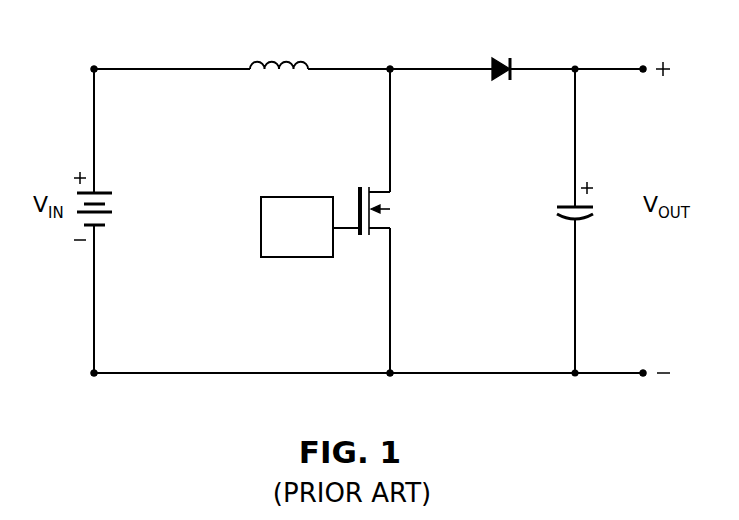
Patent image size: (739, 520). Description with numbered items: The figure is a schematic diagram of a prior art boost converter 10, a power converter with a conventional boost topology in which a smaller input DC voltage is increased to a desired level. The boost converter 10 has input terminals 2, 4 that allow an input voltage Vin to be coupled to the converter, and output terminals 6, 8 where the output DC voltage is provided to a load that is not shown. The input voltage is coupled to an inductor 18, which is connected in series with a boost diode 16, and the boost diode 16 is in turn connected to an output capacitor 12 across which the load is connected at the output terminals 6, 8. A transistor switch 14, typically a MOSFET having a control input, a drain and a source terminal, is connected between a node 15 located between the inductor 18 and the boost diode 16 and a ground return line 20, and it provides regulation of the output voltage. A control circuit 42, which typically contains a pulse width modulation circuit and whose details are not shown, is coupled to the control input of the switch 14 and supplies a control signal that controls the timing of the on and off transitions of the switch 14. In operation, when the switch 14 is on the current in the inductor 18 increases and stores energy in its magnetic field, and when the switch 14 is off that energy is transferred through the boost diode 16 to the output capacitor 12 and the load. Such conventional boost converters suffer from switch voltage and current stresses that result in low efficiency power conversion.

The boost converter 10 is at (84, 38).
The input terminal 2 is at (92, 69).
The input terminal 4 is at (92, 373).
The output terminal 6 is at (643, 66).
The output terminal 8 is at (642, 370).
The output capacitor 12 is at (565, 205).
The transistor switch 14 is at (393, 218).
The node 15 is at (390, 66).
The boost diode 16 is at (497, 60).
The inductor 18 is at (272, 61).
The ground return line 20 is at (388, 370).
The control circuit 42 is at (290, 197).